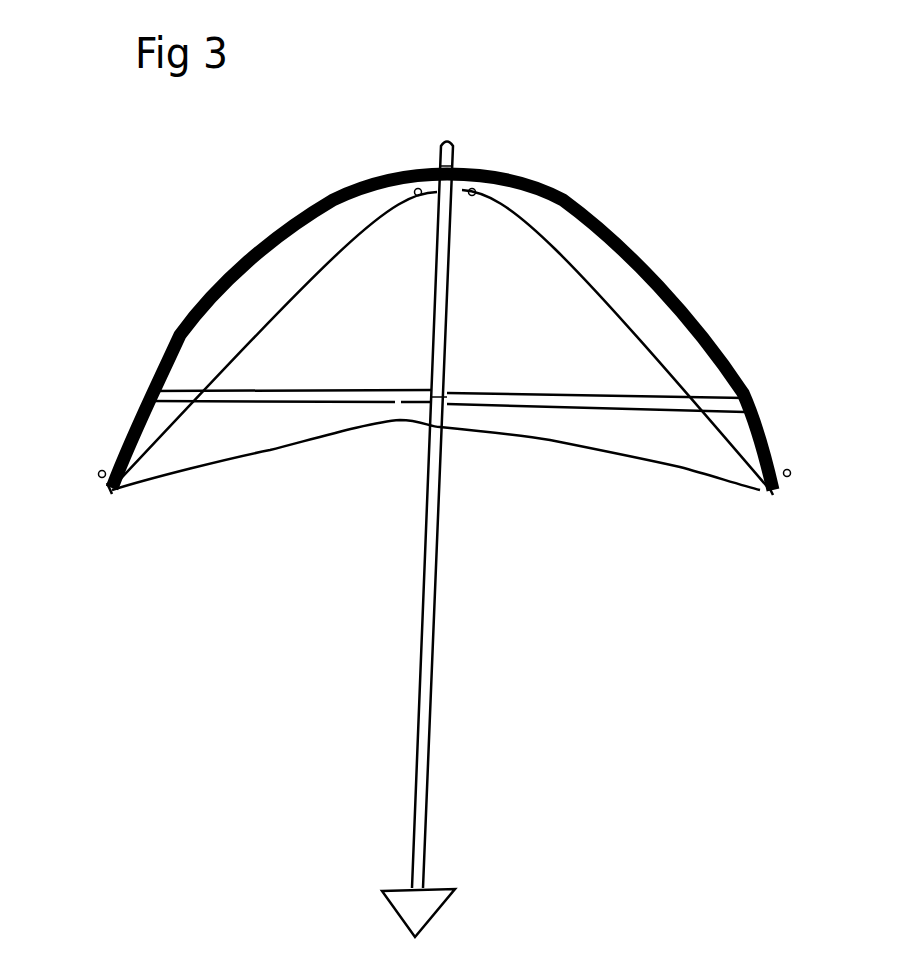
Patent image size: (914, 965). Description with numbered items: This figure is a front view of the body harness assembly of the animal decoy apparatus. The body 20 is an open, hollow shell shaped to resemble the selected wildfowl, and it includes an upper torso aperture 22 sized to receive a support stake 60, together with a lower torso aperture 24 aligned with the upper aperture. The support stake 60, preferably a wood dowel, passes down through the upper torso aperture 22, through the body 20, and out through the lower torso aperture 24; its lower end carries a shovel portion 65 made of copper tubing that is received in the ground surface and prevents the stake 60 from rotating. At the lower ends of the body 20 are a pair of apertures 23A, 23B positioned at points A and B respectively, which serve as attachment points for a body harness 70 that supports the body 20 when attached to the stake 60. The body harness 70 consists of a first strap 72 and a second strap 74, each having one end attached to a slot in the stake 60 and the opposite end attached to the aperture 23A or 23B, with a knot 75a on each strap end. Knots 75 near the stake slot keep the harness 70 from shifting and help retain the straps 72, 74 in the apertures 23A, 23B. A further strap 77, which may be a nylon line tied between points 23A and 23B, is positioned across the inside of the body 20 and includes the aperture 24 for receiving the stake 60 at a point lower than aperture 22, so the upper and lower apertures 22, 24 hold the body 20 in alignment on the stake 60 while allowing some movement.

The body 20 is at (623, 240).
The upper torso aperture 22 is at (462, 168).
The aperture 23A is at (107, 488).
The aperture 23B is at (768, 495).
The lower torso aperture 24 is at (447, 402).
The support stake 60 is at (432, 690).
The shovel portion 65 is at (440, 890).
The body harness 70 is at (295, 272).
The first strap 72 is at (238, 347).
The second strap 74 is at (622, 305).
The knots 75 is at (418, 196).
The knot 75a is at (103, 468).
The strap 77 is at (334, 390).
The point A is at (108, 470).
The point B is at (776, 462).